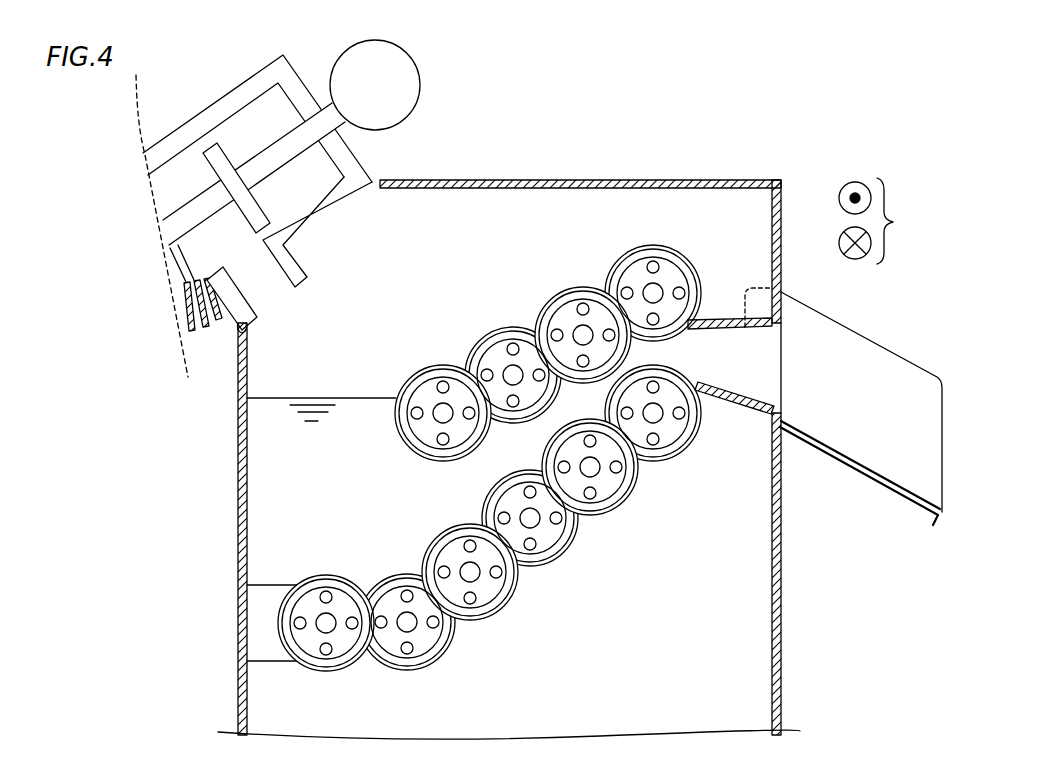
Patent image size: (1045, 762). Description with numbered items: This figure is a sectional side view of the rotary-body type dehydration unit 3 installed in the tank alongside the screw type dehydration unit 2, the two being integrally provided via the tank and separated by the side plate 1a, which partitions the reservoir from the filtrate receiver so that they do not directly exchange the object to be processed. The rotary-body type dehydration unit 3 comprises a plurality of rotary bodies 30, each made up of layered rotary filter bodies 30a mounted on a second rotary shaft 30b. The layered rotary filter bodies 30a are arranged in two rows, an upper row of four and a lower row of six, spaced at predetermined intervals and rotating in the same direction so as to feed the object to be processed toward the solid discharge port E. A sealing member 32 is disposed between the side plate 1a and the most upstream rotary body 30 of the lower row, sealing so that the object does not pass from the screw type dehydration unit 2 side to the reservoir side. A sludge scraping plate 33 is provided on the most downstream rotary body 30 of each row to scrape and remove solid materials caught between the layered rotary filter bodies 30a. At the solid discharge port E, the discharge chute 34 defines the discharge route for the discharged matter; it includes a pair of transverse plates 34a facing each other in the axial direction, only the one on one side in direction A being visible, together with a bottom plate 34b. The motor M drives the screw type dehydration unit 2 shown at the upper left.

The side plate 1a is at (240, 640).
The screw type dehydration unit 2 is at (278, 208).
The rotary-body type dehydration unit 3 is at (757, 154).
The rotary body 30 is at (500, 439).
The layered rotary filter body 30a is at (432, 366).
The second rotary shaft 30b is at (436, 403).
The sealing member 32 is at (255, 622).
The sludge scraping plate 33 is at (704, 320).
The discharge chute 34 is at (861, 448).
The transverse plate 34a is at (903, 463).
The bottom plate 34b is at (928, 512).
The direction A is at (879, 221).
The solid discharge port E is at (782, 407).
The motor M is at (375, 85).